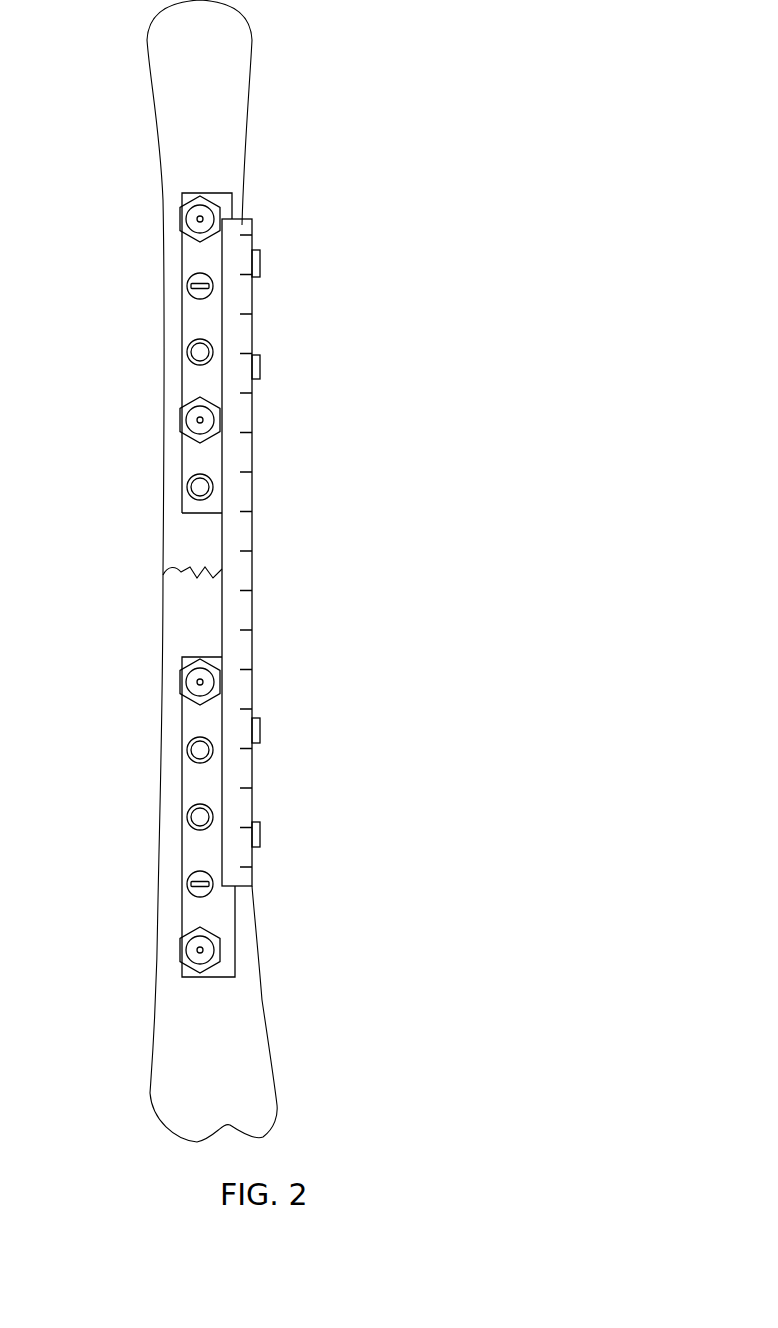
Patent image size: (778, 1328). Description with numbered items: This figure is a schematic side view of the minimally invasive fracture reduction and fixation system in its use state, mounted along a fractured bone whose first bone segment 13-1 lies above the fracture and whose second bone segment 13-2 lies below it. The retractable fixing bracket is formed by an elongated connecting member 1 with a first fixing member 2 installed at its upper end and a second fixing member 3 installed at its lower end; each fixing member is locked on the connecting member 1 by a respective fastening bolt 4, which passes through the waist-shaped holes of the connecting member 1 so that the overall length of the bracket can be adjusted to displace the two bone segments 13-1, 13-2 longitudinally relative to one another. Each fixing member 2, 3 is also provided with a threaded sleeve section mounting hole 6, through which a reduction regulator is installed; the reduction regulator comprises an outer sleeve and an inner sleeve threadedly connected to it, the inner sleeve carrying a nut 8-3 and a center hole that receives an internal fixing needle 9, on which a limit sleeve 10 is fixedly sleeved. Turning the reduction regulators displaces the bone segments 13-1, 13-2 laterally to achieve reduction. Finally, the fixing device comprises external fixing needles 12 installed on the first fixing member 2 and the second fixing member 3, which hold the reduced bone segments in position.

The connecting member 1 is at (242, 483).
The first fixing member 2 is at (195, 255).
The second fixing member 3 is at (195, 852).
The fastening bolt 4 is at (258, 367).
The threaded sleeve section mounting hole 6 is at (212, 750).
The nut 8-3 is at (218, 677).
The internal fixing needle 9 is at (198, 680).
The limit sleeve 10 is at (195, 687).
The external fixing needle 12 is at (205, 885).
The first bone segment 13-1 is at (218, 158).
The second bone segment 13-2 is at (230, 1040).